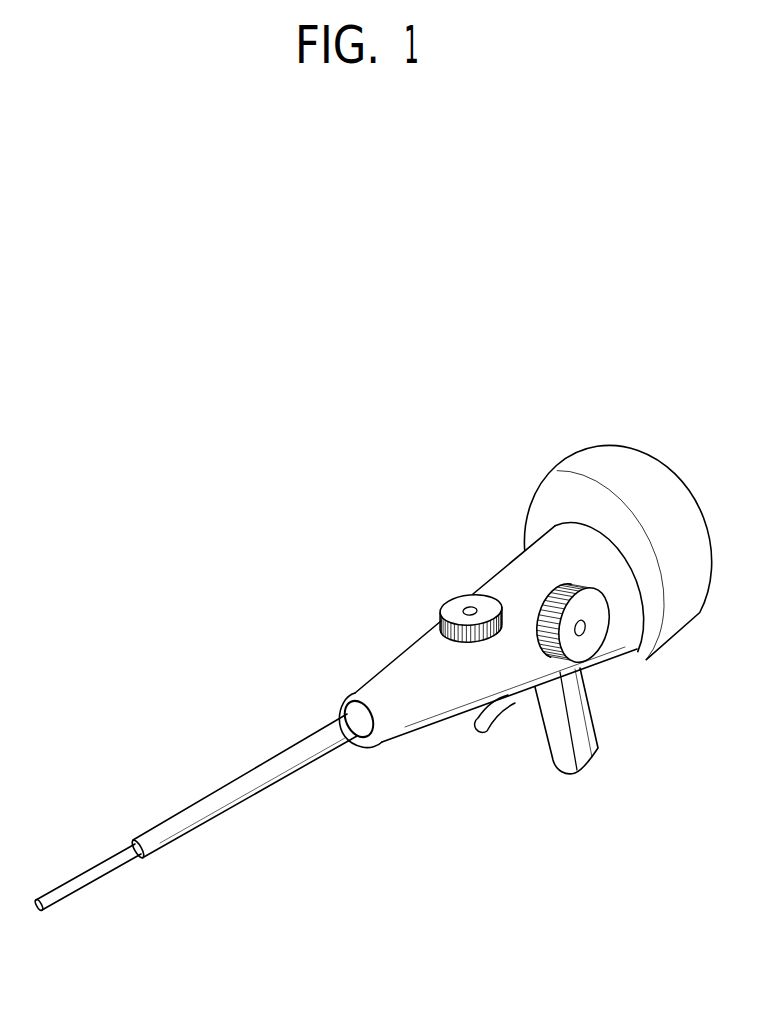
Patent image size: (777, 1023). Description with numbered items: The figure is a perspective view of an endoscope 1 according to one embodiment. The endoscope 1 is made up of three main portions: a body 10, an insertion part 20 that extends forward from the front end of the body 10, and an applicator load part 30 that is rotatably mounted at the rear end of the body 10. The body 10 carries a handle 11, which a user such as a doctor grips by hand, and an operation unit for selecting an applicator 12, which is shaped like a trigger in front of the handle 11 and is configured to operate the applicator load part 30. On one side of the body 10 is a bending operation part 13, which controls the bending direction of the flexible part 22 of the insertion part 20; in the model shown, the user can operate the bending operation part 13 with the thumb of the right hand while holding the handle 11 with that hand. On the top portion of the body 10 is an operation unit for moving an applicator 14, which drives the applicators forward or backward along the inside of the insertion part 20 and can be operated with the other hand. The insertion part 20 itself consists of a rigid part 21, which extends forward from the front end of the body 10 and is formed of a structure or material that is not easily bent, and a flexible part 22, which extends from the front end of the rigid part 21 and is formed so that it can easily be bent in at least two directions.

The endoscope 1 is at (412, 311).
The body 10 is at (387, 680).
The handle 11 is at (577, 713).
The operation unit for selecting an applicator 12 is at (477, 732).
The bending operation part 13 is at (585, 643).
The operation unit for moving an applicator 14 is at (458, 608).
The insertion part 20 is at (195, 812).
The rigid part 21 is at (183, 817).
The flexible part 22 is at (87, 850).
The applicator load part 30 is at (608, 457).